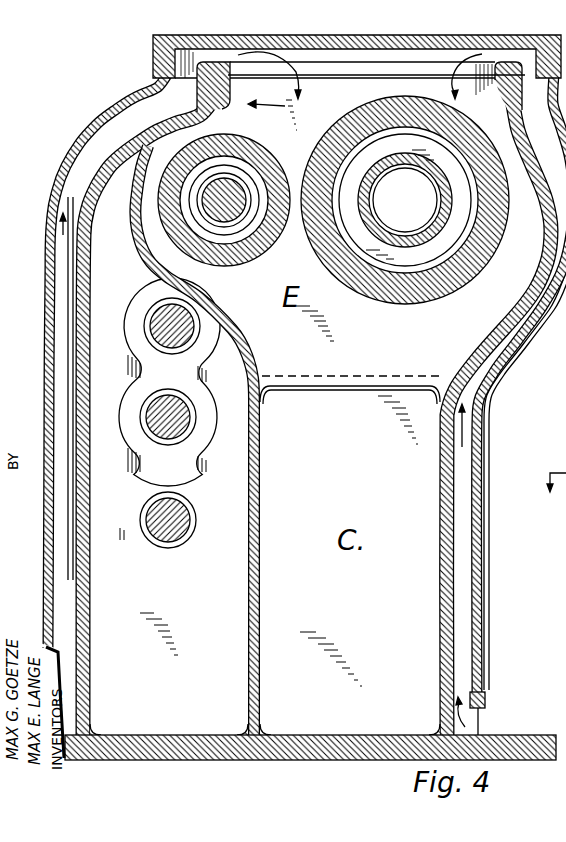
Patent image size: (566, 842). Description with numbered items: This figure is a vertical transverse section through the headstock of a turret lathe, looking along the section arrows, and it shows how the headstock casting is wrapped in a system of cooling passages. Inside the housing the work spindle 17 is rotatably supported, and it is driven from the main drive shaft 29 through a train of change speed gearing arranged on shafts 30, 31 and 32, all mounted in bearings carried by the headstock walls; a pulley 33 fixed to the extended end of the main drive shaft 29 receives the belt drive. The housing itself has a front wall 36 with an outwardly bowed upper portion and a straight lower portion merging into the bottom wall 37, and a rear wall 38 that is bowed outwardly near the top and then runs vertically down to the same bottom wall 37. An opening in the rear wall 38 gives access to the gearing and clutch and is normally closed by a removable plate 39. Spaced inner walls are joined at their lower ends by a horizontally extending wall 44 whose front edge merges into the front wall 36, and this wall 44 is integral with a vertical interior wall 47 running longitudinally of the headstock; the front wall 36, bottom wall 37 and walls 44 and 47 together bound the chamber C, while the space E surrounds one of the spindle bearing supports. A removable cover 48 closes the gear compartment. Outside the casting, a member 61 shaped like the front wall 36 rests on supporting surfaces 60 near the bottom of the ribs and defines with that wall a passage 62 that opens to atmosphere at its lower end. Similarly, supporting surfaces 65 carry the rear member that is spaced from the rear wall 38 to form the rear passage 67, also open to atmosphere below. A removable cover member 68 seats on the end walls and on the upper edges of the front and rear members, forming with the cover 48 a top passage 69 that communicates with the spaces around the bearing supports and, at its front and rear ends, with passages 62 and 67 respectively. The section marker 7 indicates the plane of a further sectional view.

The work spindle 17 is at (373, 211).
The main drive shaft 29 is at (175, 540).
The shaft 30 is at (180, 408).
The shaft 31 is at (180, 310).
The shaft 32 is at (240, 218).
The pulley 33 is at (527, 476).
The front wall 36 is at (456, 350).
The bottom wall 37 is at (167, 754).
The rear wall 38 is at (88, 165).
The removable plate 39 is at (72, 393).
The horizontally extending wall 44 is at (328, 379).
The vertical interior wall 47 is at (262, 487).
The removable cover 48 is at (224, 62).
The supporting surfaces 60 is at (478, 730).
The member 61 is at (483, 425).
The passage 62 is at (463, 490).
The supporting surfaces 65 is at (536, 729).
The passage 67 is at (63, 347).
The removable cover member 68 is at (360, 37).
The passage 69 is at (450, 50).
The section line 7 is at (545, 494).